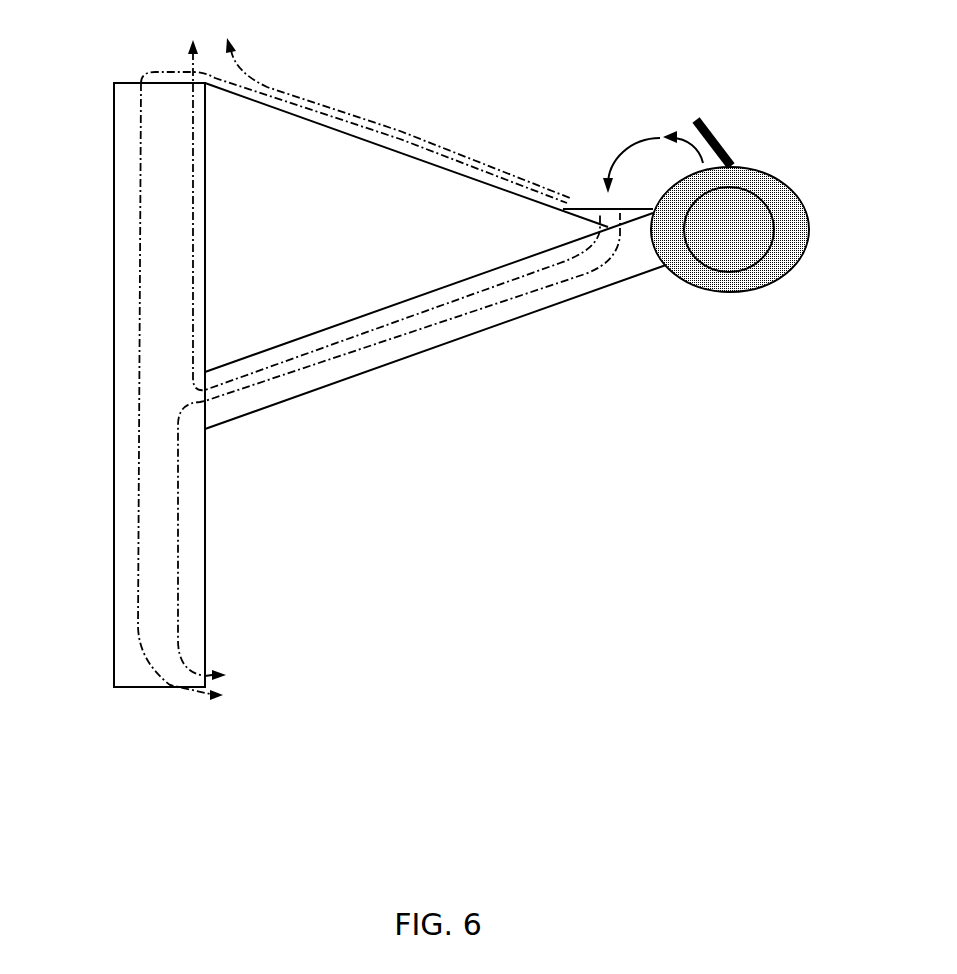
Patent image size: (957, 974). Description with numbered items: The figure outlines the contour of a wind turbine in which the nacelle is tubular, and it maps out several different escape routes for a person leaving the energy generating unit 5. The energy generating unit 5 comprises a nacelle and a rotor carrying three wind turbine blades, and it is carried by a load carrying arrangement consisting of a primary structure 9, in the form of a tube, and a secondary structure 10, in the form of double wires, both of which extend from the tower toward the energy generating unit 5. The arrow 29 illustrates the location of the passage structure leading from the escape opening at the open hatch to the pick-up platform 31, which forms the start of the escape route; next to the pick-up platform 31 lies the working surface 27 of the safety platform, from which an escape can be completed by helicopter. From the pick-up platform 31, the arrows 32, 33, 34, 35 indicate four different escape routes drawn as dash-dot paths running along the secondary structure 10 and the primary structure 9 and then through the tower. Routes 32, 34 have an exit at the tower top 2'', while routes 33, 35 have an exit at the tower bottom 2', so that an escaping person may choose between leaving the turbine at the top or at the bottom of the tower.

The tower bottom 2' is at (128, 671).
The tower top 2'' is at (126, 99).
The energy generating unit 5 is at (810, 236).
The primary structure 9 is at (452, 342).
The secondary structure 10 is at (409, 156).
The working surface 27 is at (715, 125).
The arrow 29 is at (615, 140).
The pick-up platform 31 is at (580, 207).
The escape route 32 is at (421, 131).
The escape route 33 is at (320, 115).
The escape route 34 is at (192, 215).
The escape route 35 is at (178, 518).